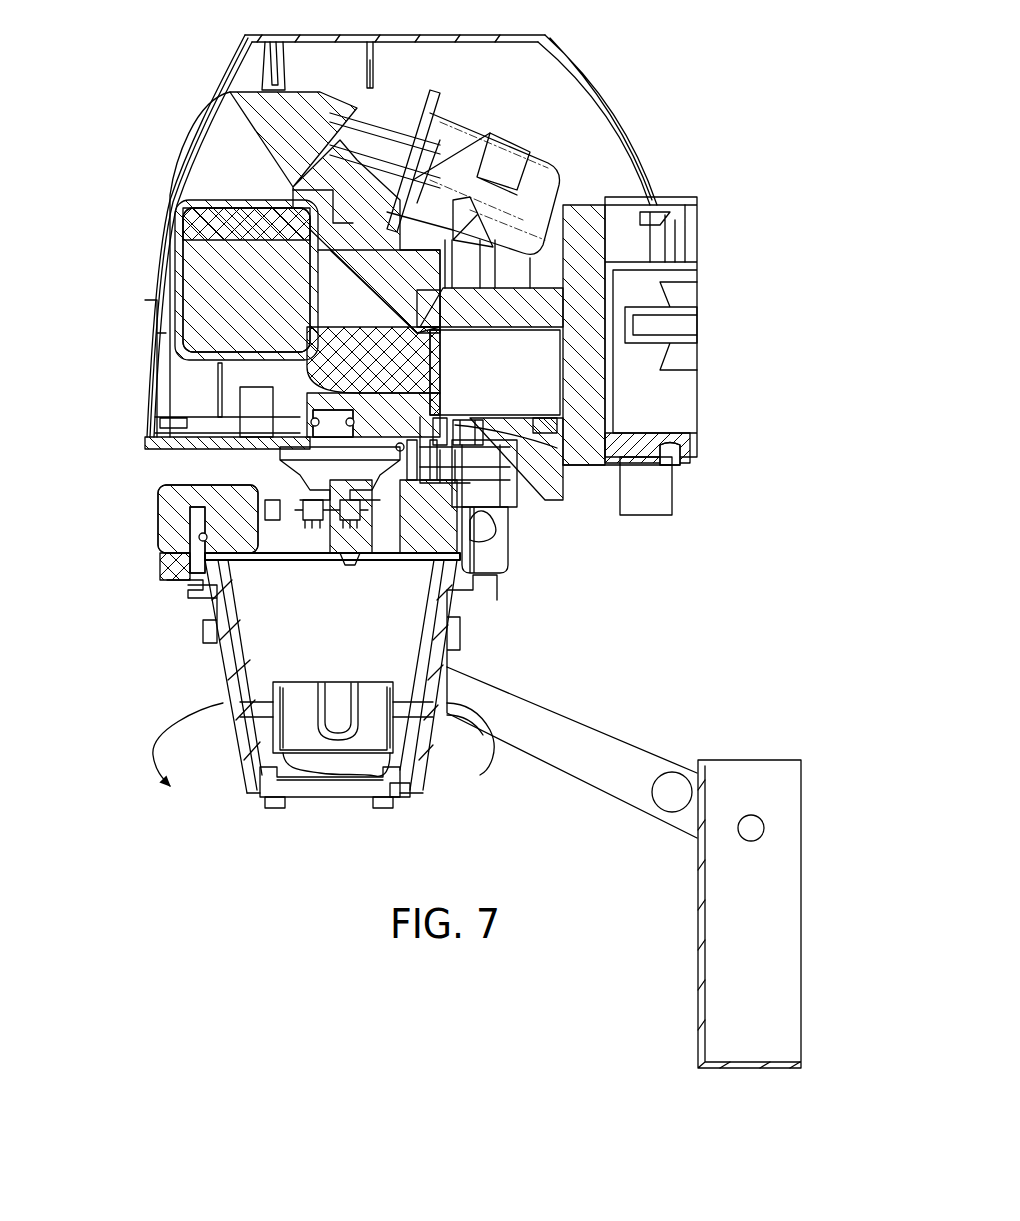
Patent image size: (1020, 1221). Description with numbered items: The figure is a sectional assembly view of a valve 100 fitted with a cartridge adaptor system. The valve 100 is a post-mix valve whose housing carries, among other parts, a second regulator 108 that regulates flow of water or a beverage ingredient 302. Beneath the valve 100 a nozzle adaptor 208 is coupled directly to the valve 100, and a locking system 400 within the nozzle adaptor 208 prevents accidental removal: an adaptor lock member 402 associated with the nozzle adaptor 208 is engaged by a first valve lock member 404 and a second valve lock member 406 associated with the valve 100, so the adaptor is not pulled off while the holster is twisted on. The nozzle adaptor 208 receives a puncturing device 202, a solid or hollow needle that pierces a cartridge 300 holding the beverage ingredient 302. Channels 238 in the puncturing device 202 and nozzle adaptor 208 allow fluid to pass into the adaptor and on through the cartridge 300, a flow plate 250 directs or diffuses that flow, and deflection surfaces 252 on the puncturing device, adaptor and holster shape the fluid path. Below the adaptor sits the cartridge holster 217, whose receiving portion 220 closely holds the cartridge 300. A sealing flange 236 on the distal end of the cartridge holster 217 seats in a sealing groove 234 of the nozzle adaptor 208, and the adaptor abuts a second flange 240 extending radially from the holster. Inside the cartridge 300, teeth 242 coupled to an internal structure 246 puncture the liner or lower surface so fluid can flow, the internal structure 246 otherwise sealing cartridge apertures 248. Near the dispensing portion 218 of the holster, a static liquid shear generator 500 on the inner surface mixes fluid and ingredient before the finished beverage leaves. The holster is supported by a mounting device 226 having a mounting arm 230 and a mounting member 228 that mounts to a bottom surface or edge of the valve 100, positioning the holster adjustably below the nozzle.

The valve 100 is at (152, 90).
The second regulator 108 is at (505, 166).
The puncturing device 202 is at (330, 586).
The nozzle adaptor 208 is at (148, 520).
The cartridge holster 217 is at (132, 645).
The dispensing portion 218 is at (257, 790).
The receiving portion 220 is at (190, 517).
The mounting device 226 is at (824, 810).
The mounting member 228 is at (730, 915).
The mounting arm 230 is at (593, 740).
The sealing groove 234 is at (183, 550).
The sealing flange 236 is at (478, 535).
The channels 238 is at (260, 483).
The second flange 240 is at (475, 583).
The teeth 242 is at (433, 773).
The internal structure 246 is at (340, 733).
The cartridge apertures 248 is at (290, 780).
The flow plate 250 is at (387, 513).
The deflection surfaces 252 is at (400, 415).
The cartridge 300 is at (475, 688).
The beverage ingredient 302 is at (363, 655).
The locking system 400 is at (578, 485).
The adaptor lock member 402 is at (400, 493).
The first valve lock member 404 is at (490, 440).
The second valve lock member 406 is at (547, 453).
The static liquid shear generator 500 is at (240, 440).